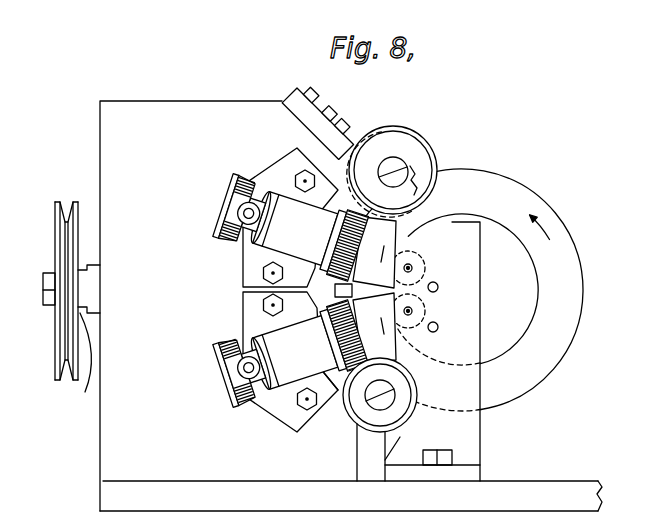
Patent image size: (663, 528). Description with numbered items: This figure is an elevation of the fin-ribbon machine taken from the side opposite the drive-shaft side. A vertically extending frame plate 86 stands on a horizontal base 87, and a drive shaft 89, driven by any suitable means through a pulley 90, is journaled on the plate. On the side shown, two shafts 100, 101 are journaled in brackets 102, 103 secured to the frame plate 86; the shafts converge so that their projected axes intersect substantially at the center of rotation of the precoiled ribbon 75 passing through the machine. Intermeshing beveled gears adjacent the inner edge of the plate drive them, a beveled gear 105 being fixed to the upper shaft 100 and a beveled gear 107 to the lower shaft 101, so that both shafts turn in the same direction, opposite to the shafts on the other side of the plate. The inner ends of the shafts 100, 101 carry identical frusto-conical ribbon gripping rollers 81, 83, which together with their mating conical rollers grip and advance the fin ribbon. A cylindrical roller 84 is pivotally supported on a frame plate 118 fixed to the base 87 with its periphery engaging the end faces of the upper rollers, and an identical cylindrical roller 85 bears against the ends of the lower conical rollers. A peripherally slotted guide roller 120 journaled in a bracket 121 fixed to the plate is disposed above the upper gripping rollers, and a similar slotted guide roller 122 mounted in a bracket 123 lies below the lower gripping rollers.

The precoiled ribbon 75 is at (553, 216).
The frusto-conical ribbon gripping roller 81 is at (376, 226).
The frusto-conical ribbon gripping roller 83 is at (378, 342).
The cylindrical roller 84 is at (410, 237).
The cylindrical roller 85 is at (418, 330).
The frame plate 86 is at (110, 452).
The base 87 is at (524, 487).
The drive shaft 89 is at (76, 367).
The pulley 90 is at (57, 355).
The shaft 100 is at (238, 207).
The shaft 101 is at (240, 370).
The bracket 102 is at (292, 202).
The bracket 103 is at (285, 393).
The beveled gear 105 is at (359, 292).
The beveled gear 107 is at (340, 397).
The frame plate 118 is at (481, 430).
The peripherally slotted guide roller 120 is at (393, 127).
The bracket 121 is at (353, 143).
The peripherally slotted guide roller 122 is at (408, 412).
The bracket 123 is at (362, 453).